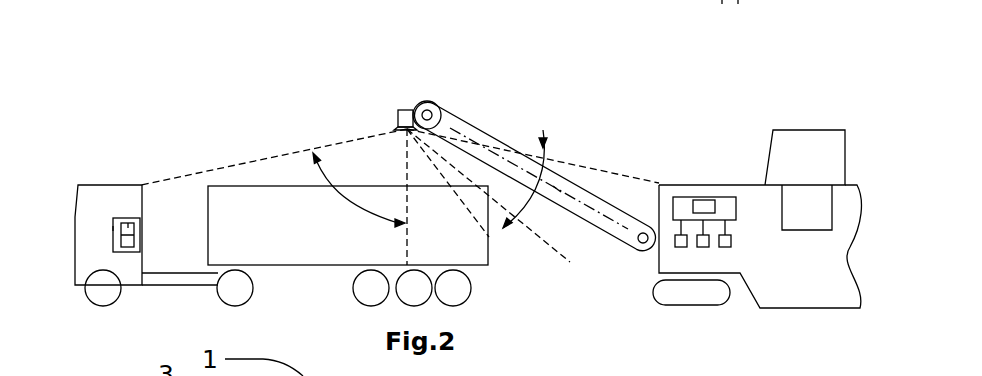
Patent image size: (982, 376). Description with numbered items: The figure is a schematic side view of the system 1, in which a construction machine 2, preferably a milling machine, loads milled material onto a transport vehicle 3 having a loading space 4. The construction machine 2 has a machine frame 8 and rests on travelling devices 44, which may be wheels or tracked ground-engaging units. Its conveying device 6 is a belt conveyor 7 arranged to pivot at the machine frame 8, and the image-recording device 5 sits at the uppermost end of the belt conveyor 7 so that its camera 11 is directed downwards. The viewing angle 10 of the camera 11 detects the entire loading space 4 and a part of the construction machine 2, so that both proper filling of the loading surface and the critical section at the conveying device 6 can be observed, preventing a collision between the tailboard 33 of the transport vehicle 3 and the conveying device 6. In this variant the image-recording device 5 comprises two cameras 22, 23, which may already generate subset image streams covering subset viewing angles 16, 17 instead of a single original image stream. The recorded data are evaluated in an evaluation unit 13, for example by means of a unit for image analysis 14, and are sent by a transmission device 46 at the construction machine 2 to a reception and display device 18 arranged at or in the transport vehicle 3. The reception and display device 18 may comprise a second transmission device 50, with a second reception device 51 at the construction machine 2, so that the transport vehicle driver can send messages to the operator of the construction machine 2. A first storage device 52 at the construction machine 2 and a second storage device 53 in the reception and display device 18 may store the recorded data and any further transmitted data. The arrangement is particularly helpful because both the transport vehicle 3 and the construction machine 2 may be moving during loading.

The system 1 is at (252, 42).
The construction machine 2 is at (762, 203).
The transport vehicle 3 is at (177, 151).
The loading space 4 is at (358, 238).
The image-recording device 5 is at (418, 101).
The conveying device 6 is at (485, 136).
The belt conveyor 7 is at (557, 190).
The machine frame 8 is at (815, 275).
The viewing angle 10 is at (303, 147).
The camera 11 is at (401, 109).
The evaluation unit 13 is at (703, 197).
The unit for image analysis 14 is at (716, 207).
The subset viewing angle 16 is at (337, 197).
The subset viewing angle 17 is at (552, 186).
The reception and display device 18 is at (113, 228).
The camera 22 is at (400, 163).
The camera 23 is at (440, 135).
The tailboard 33 is at (489, 240).
The travelling devices 44 is at (710, 306).
The transmission device 46 is at (680, 247).
The second transmission device 50 is at (130, 222).
The second reception device 51 is at (703, 248).
The first storage device 52 is at (722, 249).
The second storage device 53 is at (123, 242).